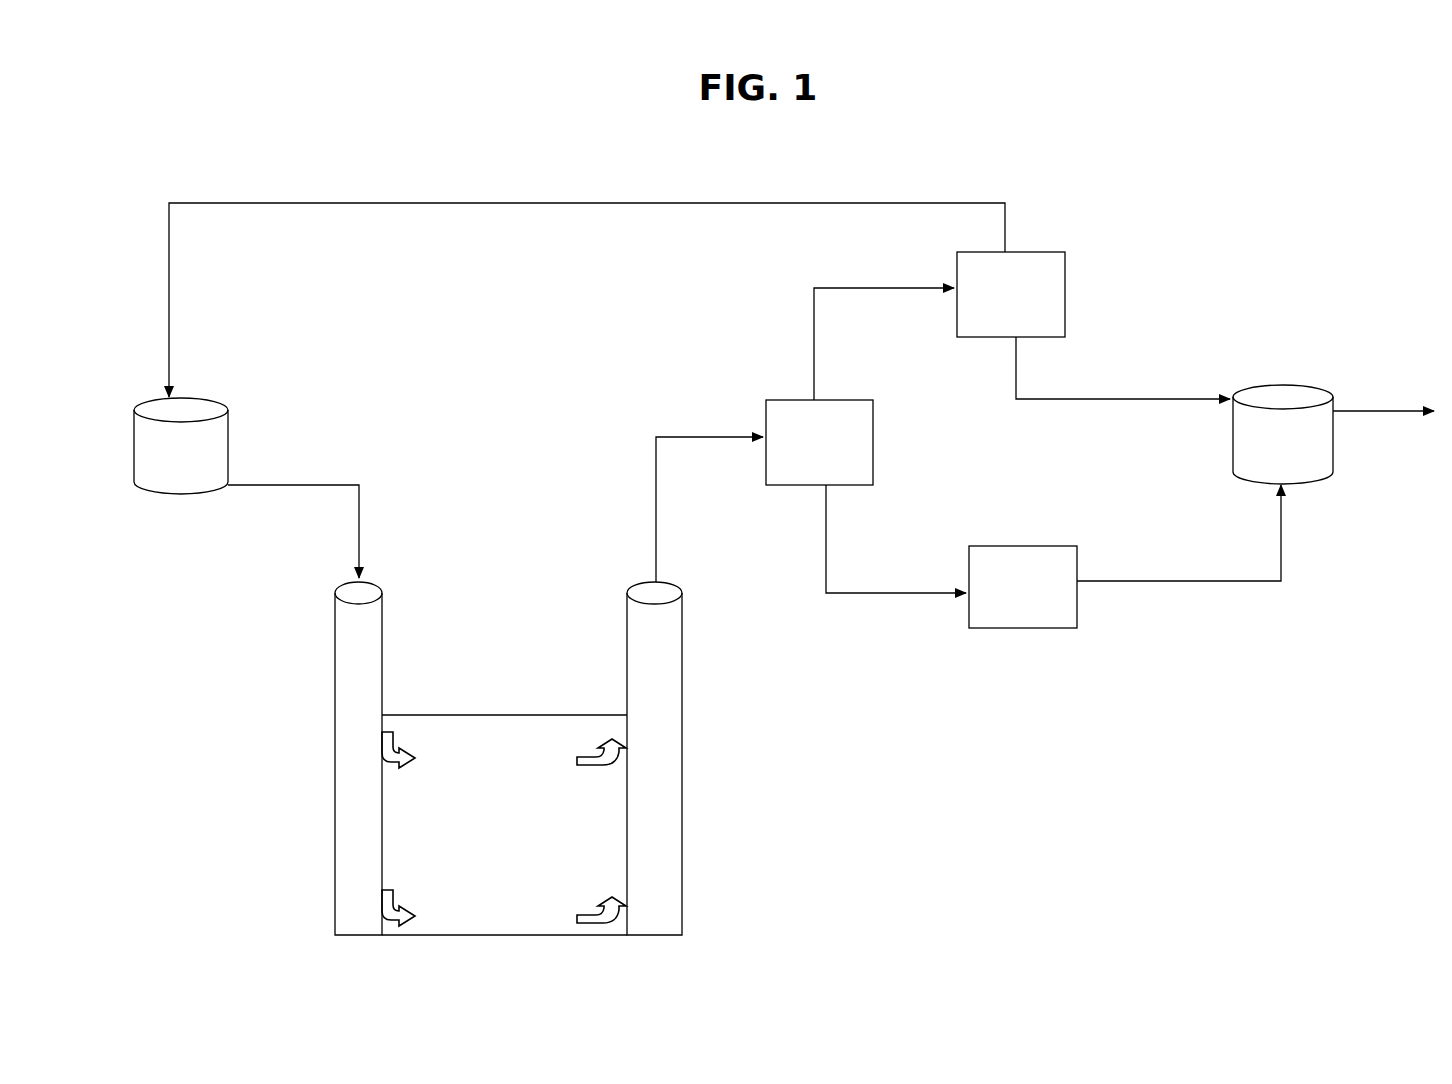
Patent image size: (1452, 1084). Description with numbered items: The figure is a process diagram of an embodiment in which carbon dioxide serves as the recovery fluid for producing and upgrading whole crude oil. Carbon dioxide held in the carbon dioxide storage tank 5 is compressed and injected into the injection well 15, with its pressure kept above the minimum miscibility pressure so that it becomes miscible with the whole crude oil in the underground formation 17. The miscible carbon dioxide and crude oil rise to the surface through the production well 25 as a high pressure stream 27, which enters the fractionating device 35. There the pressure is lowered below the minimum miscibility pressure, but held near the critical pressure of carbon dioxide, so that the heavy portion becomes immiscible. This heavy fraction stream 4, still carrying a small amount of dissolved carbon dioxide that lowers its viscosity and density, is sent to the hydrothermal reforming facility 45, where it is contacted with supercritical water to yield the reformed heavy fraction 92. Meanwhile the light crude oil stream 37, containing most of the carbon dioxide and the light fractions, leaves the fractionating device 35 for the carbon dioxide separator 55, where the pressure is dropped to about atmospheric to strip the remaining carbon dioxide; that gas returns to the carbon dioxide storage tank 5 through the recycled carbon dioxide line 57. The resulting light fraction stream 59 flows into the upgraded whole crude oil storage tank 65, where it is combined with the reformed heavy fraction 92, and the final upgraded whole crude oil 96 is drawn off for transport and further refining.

The carbon dioxide storage tank 5 is at (173, 466).
The injection well 15 is at (346, 683).
The underground formation 17 is at (477, 751).
The production well 25 is at (644, 678).
The high pressure stream 27 is at (664, 436).
The fractionating device 35 is at (802, 455).
The light crude oil stream 37 is at (895, 288).
The carbon dioxide separator 55 is at (996, 306).
The recycled carbon dioxide line 57 is at (538, 202).
The light fraction stream 59 is at (1098, 399).
The heavy fraction stream 4 is at (903, 592).
The hydrothermal reforming facility 45 is at (1003, 598).
The reformed heavy fraction 92 is at (1167, 580).
The upgraded whole crude oil storage tank 65 is at (1268, 453).
The upgraded whole crude oil 96 is at (1410, 411).